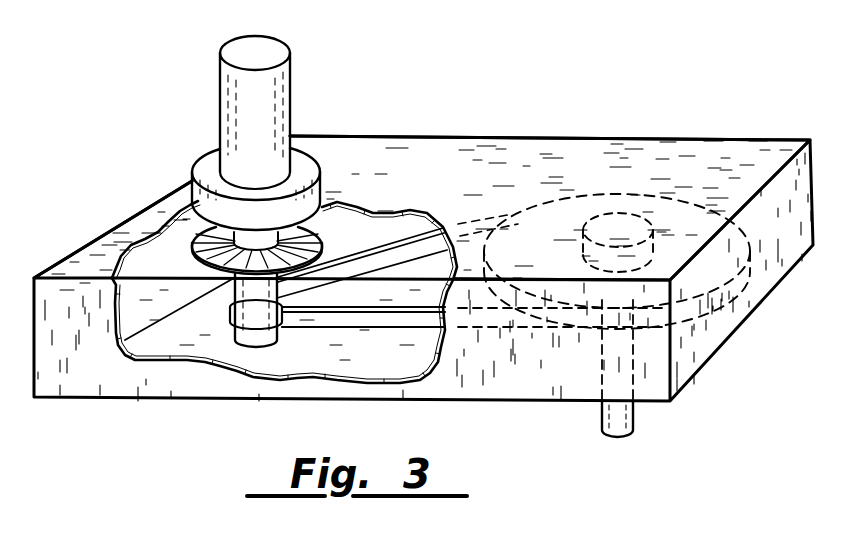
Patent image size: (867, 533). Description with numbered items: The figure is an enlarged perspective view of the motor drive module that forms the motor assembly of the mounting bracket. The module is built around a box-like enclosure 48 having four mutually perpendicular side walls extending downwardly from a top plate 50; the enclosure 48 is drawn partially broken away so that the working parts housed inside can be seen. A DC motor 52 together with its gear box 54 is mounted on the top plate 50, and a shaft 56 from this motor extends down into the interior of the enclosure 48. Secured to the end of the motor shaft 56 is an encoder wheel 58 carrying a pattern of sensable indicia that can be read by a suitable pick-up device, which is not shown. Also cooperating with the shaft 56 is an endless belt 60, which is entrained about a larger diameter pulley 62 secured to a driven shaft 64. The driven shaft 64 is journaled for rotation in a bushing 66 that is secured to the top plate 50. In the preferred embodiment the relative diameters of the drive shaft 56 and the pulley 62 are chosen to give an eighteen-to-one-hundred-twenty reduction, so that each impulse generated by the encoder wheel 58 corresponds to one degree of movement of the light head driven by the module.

The box-like enclosure 48 is at (407, 150).
The top plate 50 is at (488, 186).
The DC motor 52 is at (257, 57).
The gear box 54 is at (208, 163).
The shaft 56 is at (272, 342).
The encoder wheel 58 is at (188, 252).
The endless belt 60 is at (385, 246).
The pulley 62 is at (433, 273).
The driven shaft 64 is at (598, 413).
The bushing 66 is at (633, 215).